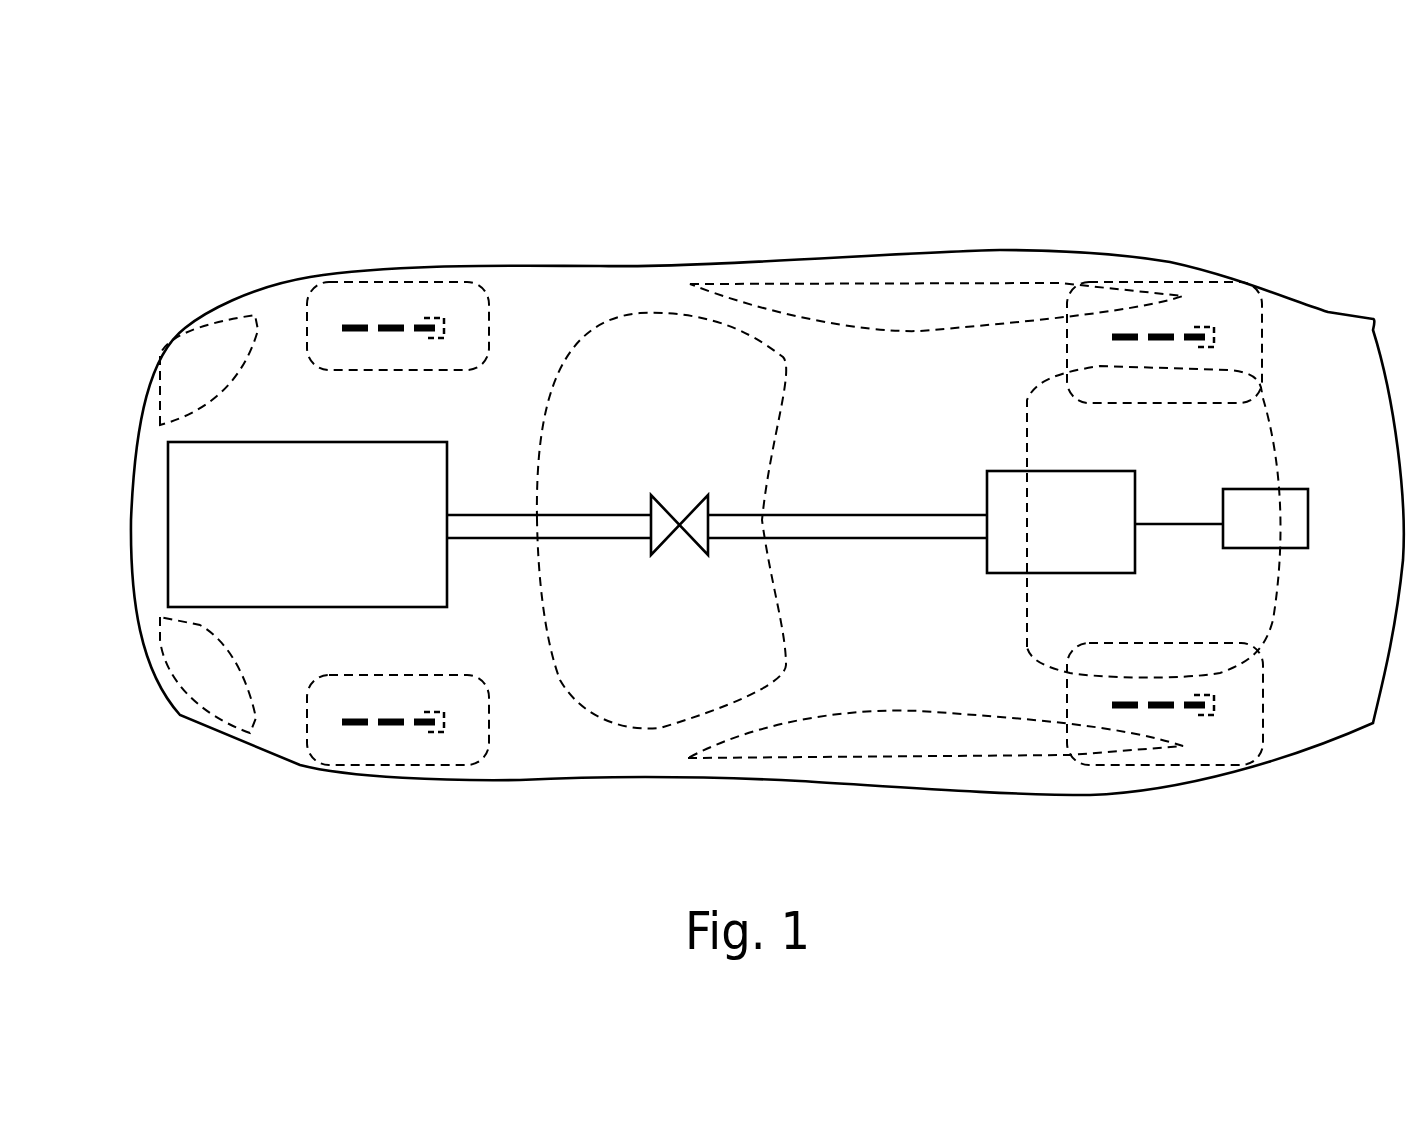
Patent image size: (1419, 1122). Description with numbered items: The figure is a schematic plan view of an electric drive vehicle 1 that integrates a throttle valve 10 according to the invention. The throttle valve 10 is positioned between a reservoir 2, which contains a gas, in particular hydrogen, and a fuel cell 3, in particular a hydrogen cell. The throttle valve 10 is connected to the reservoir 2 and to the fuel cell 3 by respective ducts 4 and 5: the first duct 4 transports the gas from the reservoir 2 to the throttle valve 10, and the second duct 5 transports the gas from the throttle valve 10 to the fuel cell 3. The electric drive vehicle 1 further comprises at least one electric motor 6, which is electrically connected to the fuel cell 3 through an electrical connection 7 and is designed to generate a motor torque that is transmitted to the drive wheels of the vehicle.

The electric drive vehicle 1 is at (300, 140).
The reservoir 2 is at (402, 466).
The fuel cell 3 is at (1095, 500).
The duct 4 is at (470, 525).
The duct 5 is at (820, 531).
The electric motor 6 is at (1290, 545).
The electrical connection 7 is at (1170, 524).
The throttle valve 10 is at (675, 497).